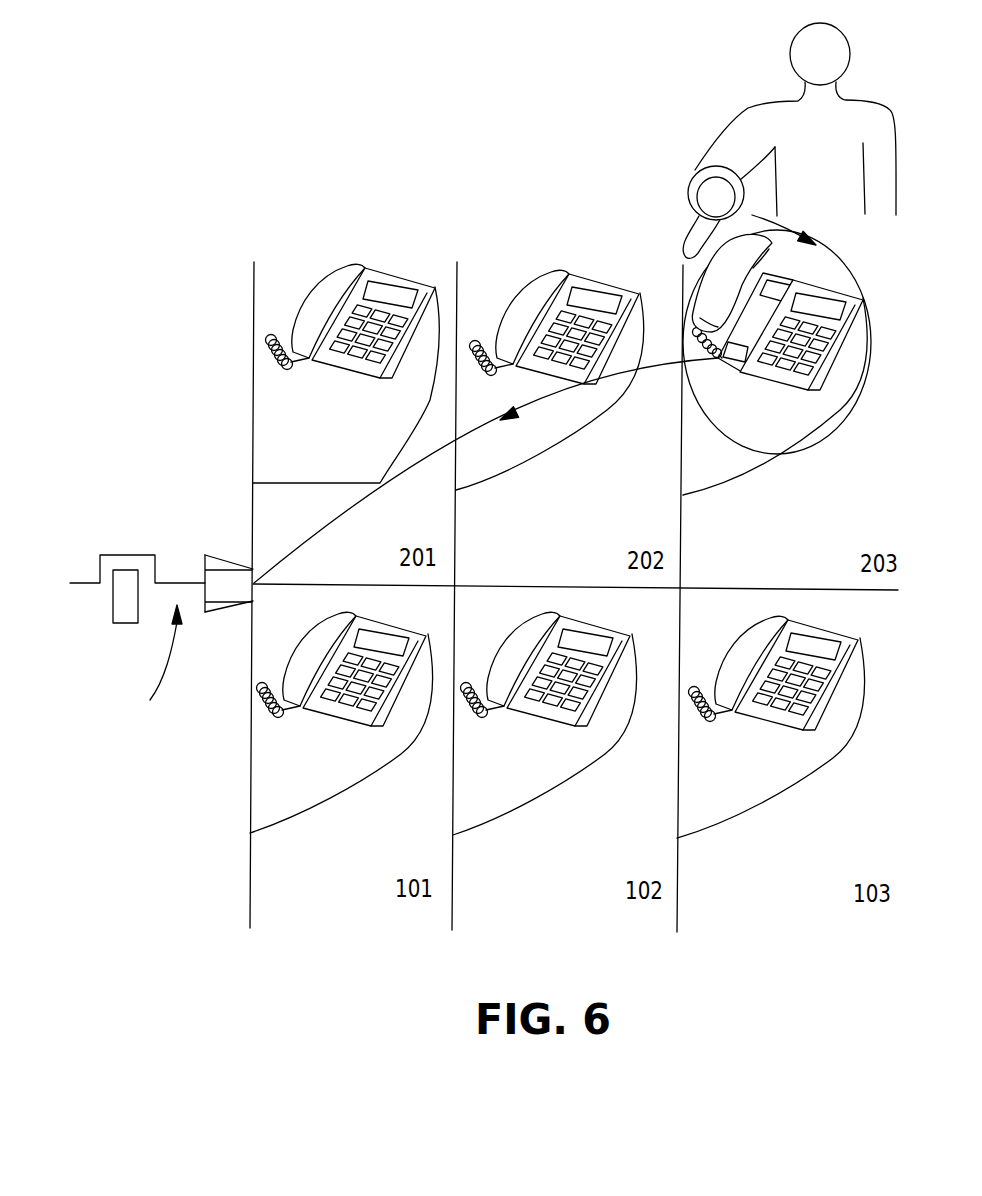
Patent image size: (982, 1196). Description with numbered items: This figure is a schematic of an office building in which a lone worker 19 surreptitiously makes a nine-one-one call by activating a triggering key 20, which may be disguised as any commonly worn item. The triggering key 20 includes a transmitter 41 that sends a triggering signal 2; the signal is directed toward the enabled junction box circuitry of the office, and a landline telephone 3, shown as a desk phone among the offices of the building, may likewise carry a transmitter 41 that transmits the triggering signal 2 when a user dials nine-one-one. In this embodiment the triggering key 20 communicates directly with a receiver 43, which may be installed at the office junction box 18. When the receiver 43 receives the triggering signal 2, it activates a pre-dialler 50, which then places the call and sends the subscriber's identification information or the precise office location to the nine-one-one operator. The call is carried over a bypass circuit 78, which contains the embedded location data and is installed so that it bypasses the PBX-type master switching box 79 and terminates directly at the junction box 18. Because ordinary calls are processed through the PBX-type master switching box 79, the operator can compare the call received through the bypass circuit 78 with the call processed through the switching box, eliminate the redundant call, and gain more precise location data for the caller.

The triggering signal 2 is at (790, 452).
The landline telephone 3 is at (803, 377).
The transmitter 41 is at (842, 295).
The lone worker 19 is at (865, 121).
The triggering key 20 is at (695, 171).
The bypass circuit 78 is at (123, 555).
The PBX-type master switching box 79 is at (130, 618).
The junction box 18 is at (158, 668).
The pre-dialler 50 is at (223, 583).
The receiver 43 is at (223, 604).